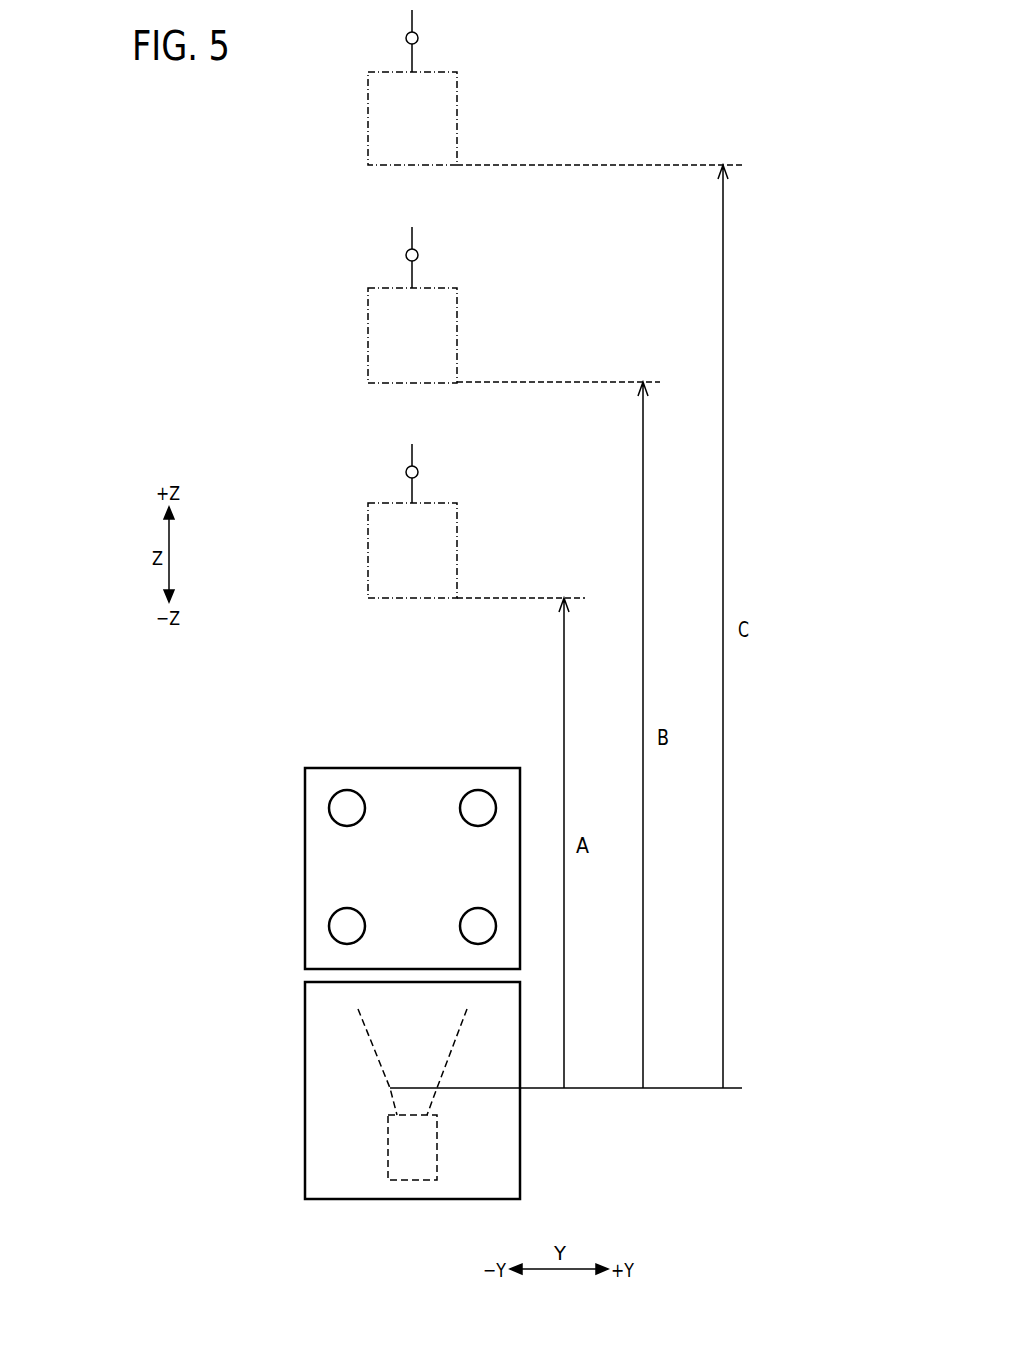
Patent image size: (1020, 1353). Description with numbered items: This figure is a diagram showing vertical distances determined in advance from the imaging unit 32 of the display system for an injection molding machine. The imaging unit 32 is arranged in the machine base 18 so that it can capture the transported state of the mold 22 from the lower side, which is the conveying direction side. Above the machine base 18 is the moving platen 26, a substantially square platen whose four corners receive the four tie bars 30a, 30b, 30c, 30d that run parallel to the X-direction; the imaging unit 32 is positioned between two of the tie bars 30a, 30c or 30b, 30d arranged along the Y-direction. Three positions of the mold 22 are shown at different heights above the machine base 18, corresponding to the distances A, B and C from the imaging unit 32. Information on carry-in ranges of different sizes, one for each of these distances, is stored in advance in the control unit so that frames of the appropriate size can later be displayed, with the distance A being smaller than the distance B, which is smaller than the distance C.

The machine base 18 is at (327, 1090).
The mold 22 is at (457, 108).
The moving platen 26 is at (408, 782).
The tie bar 30a is at (340, 806).
The tie bar 30b is at (340, 924).
The tie bar 30c is at (483, 817).
The tie bar 30d is at (483, 920).
The imaging unit 32 is at (412, 1168).